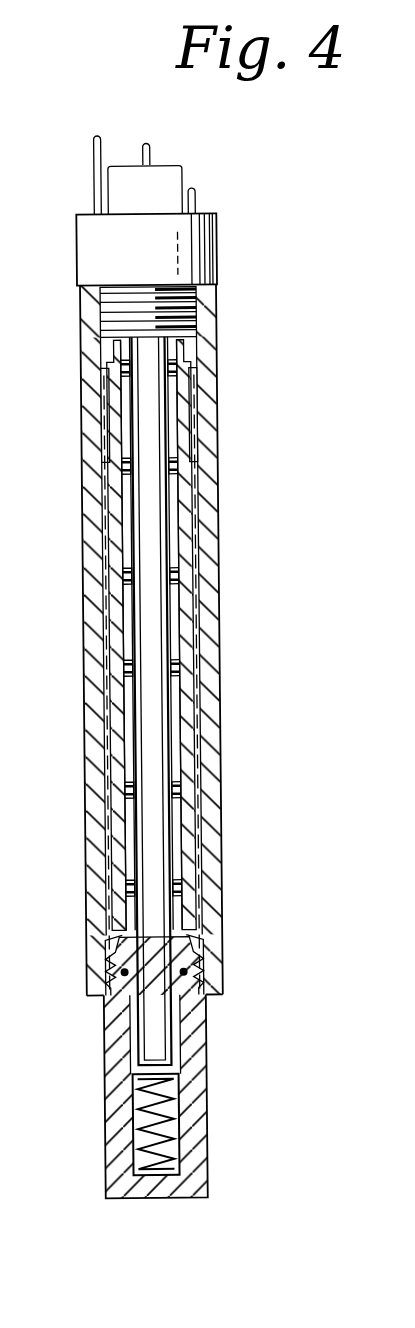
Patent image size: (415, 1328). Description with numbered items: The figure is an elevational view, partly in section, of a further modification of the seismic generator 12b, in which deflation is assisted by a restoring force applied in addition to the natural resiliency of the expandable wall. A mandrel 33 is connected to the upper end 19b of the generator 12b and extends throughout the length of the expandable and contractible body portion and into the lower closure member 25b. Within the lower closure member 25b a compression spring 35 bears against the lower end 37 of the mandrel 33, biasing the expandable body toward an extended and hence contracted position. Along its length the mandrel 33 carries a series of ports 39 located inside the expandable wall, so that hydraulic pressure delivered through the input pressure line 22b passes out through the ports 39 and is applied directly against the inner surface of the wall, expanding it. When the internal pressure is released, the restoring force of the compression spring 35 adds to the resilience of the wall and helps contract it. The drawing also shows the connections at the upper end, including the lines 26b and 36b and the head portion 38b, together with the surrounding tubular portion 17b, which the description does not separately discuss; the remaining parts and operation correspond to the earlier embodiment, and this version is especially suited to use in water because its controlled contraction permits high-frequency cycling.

The generator 12b is at (220, 633).
The outer tubular body 17b is at (203, 688).
The upper end 19b is at (207, 316).
The input pressure line 22b is at (197, 200).
The lower closure member 25b is at (207, 1117).
The lead wire 26b is at (94, 154).
The mandrel 33 is at (168, 604).
The compression spring 35 is at (135, 1115).
The lead wire 36b is at (152, 155).
The lower end 37 is at (157, 1068).
The terminal head 38b is at (122, 192).
The ports 39 is at (171, 482).